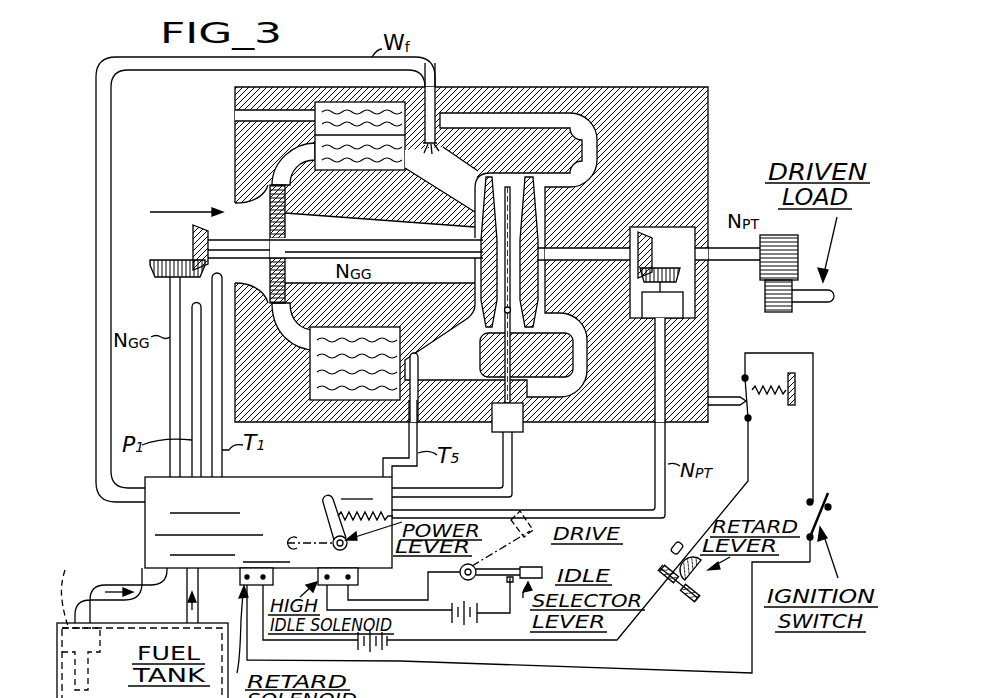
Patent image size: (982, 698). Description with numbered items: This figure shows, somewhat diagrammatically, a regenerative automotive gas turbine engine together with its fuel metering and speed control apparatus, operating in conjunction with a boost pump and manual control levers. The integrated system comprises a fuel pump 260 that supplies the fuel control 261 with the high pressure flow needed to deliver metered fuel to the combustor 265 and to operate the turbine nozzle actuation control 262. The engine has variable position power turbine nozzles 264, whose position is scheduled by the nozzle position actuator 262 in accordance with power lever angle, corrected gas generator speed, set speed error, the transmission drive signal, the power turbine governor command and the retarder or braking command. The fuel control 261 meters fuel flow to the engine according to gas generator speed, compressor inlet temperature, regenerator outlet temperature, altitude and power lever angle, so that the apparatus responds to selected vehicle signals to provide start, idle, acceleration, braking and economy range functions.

The fuel pump 260 is at (114, 590).
The fuel control 261 is at (306, 511).
The turbine nozzle actuation control 262 is at (512, 424).
The variable position power turbine nozzles 264 is at (500, 228).
The combustor 265 is at (446, 140).